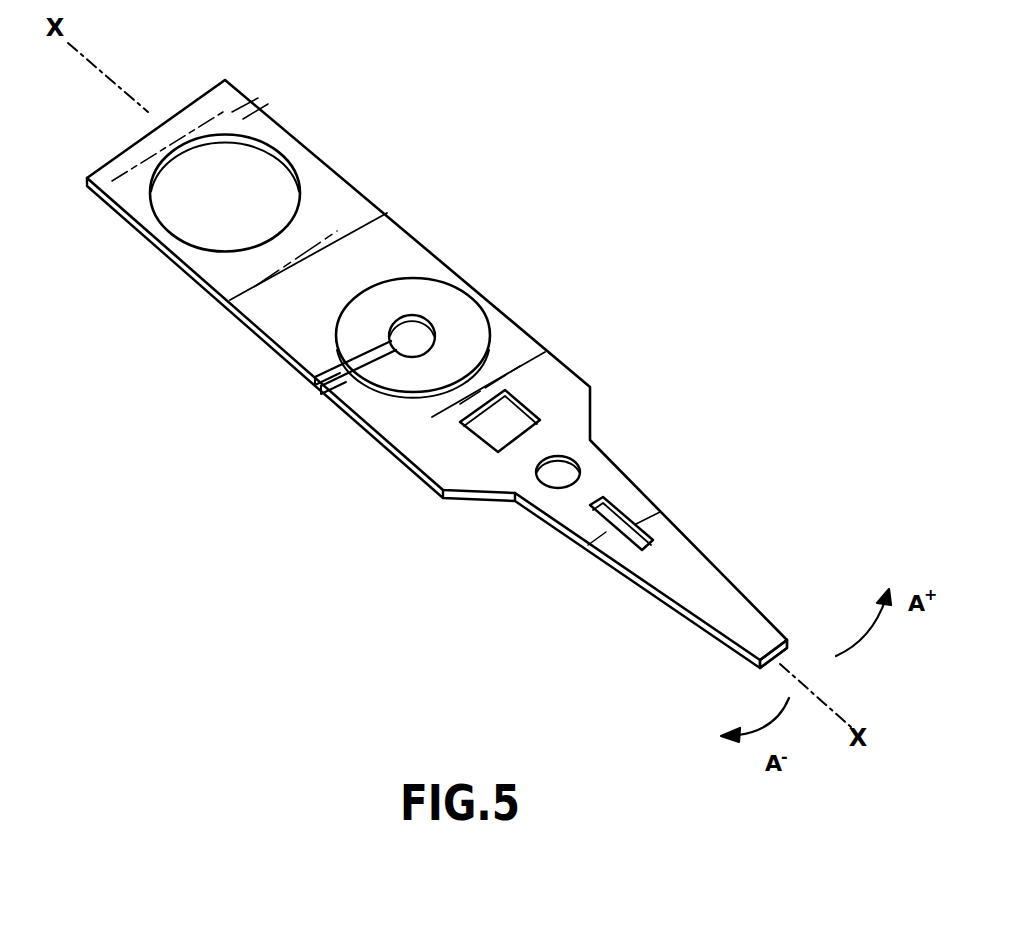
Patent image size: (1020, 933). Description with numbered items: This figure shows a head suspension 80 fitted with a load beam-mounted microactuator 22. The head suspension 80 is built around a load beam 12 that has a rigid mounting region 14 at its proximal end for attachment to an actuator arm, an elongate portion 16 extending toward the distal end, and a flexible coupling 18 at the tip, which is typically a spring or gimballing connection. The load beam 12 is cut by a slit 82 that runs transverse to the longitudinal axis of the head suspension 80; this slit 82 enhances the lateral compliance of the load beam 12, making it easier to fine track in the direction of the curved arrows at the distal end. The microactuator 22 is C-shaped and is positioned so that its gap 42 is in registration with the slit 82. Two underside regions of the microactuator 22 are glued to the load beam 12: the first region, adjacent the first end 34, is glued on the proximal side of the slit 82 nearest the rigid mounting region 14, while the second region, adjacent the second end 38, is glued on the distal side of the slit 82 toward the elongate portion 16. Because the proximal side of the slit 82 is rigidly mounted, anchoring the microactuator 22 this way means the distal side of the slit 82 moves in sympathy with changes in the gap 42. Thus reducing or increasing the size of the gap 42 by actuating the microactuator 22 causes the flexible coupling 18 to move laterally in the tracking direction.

The load beam 12 is at (540, 338).
The rigid mounting region 14 is at (145, 137).
The elongate portion 16 is at (647, 495).
The flexible coupling 18 is at (772, 623).
The load beam-mounted microactuator 22 is at (418, 297).
The gap 42 is at (387, 350).
The first end 34 is at (320, 377).
The slit 82 is at (330, 402).
The second end 38 is at (360, 387).
The head suspension 80 is at (578, 263).